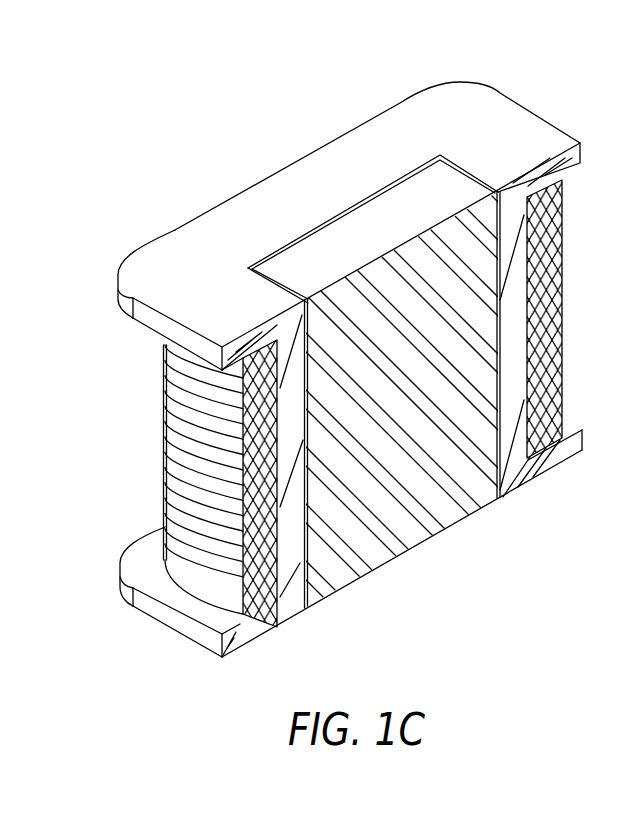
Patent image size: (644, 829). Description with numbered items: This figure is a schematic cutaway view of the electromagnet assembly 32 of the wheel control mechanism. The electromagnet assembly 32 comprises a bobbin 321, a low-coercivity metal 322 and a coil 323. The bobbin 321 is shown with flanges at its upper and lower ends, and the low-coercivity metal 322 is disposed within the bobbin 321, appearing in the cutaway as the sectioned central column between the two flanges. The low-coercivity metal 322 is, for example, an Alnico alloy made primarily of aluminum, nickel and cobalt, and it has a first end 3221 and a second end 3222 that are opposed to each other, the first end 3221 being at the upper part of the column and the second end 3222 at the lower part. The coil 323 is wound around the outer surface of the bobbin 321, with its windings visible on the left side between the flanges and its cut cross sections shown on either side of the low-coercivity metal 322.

The electromagnet assembly 32 is at (253, 186).
The bobbin 321 is at (522, 122).
The first end 3221 is at (389, 217).
The low-coercivity metal 322 is at (415, 349).
The second end 3222 is at (413, 532).
The coil 323 is at (165, 450).